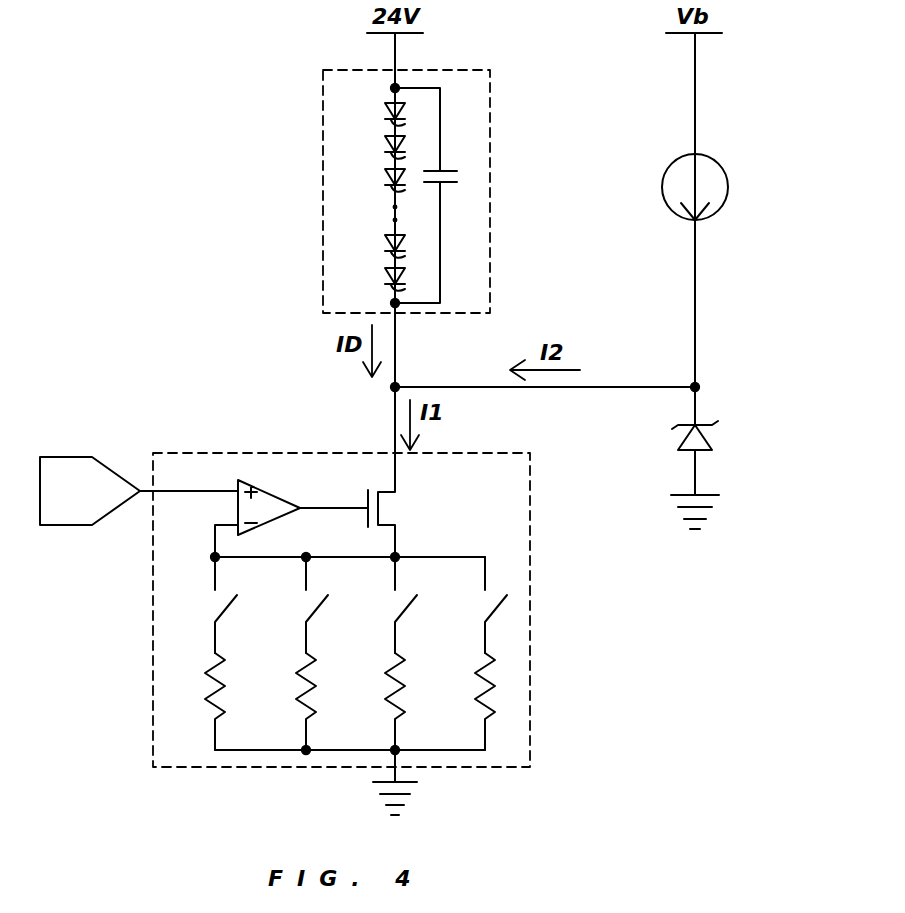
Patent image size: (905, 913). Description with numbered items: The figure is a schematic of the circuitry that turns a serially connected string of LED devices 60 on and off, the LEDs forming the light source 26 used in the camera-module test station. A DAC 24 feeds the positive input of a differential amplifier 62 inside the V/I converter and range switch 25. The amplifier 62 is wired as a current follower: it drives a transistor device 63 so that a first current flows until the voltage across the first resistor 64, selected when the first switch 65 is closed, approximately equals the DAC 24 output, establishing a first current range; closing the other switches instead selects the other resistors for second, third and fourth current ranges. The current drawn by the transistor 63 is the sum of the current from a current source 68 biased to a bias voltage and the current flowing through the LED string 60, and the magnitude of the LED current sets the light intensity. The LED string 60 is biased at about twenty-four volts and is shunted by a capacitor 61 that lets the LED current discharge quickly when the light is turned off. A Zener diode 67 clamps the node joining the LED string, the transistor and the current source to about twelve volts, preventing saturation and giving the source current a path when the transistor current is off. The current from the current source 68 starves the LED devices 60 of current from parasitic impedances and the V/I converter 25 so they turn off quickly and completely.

The DAC 24 is at (52, 457).
The V/I converter and range switch 25 is at (530, 705).
The light source 26 is at (457, 68).
The string of LED devices 60 is at (385, 172).
The capacitor 61 is at (457, 170).
The differential amplifier 62 is at (268, 488).
The transistor device 63 is at (364, 505).
The resistor R1 64 is at (165, 693).
The switch S1 65 is at (169, 605).
The zener diode 67 is at (700, 423).
The current source 68 is at (715, 215).